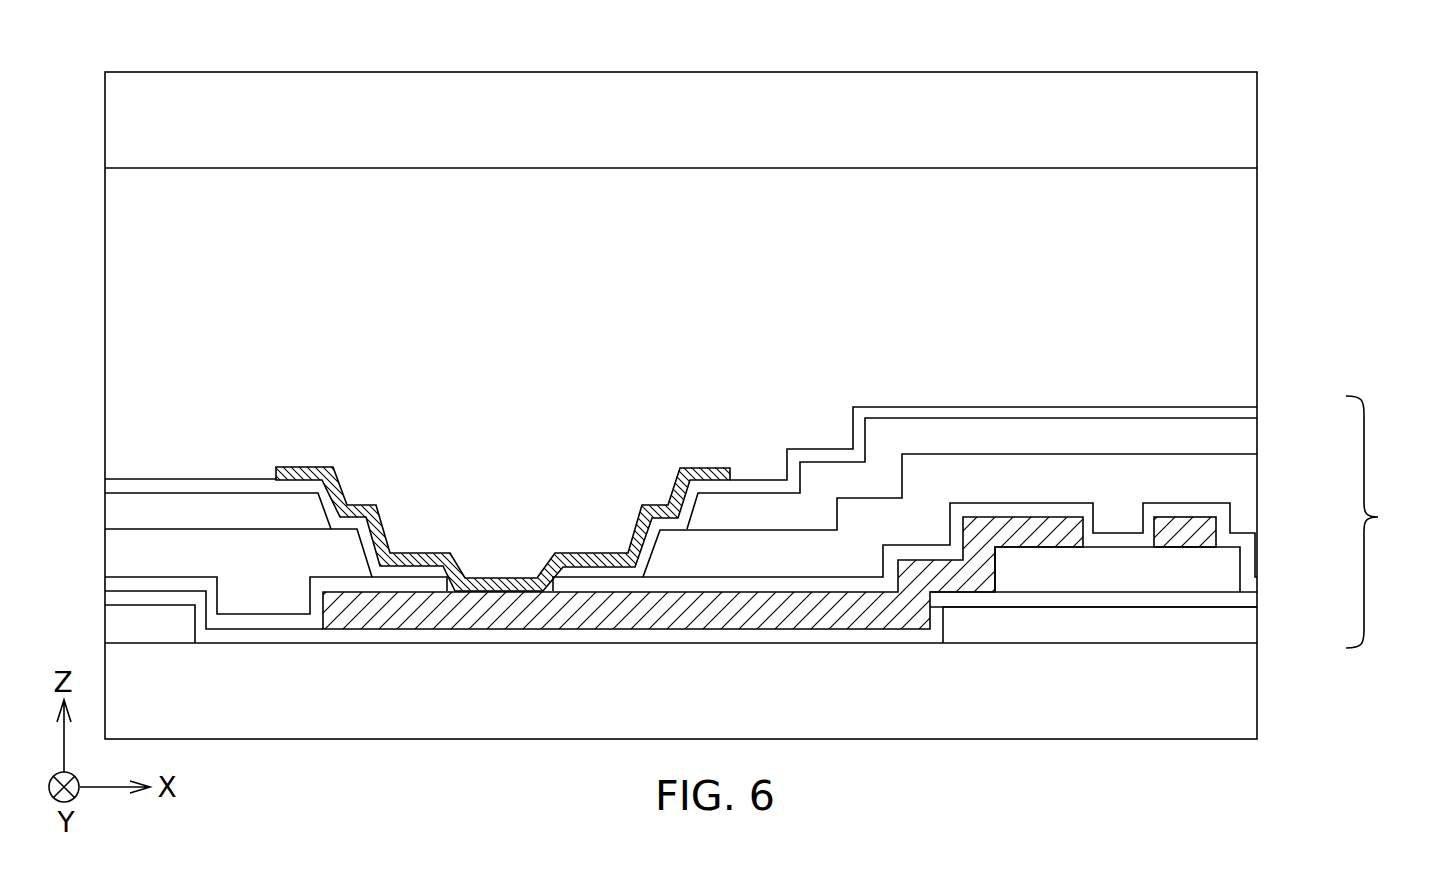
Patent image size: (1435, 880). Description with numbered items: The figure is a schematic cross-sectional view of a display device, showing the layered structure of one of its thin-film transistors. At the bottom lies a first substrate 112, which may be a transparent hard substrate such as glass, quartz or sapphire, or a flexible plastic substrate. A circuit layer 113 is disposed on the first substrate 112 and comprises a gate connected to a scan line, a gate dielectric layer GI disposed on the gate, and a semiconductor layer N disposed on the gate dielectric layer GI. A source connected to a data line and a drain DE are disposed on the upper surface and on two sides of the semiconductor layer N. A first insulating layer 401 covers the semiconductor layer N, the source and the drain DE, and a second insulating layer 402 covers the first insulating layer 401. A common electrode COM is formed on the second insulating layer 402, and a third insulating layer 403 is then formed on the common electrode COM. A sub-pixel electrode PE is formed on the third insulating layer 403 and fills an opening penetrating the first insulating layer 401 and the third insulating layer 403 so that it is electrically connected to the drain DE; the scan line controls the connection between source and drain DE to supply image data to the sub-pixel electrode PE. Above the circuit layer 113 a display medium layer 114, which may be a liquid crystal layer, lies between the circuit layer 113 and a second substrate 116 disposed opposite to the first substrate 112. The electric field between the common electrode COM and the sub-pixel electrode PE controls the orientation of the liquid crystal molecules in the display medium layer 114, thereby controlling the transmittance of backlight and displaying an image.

The second substrate 116 is at (1250, 113).
The display medium layer 114 is at (1250, 290).
The circuit layer 113 is at (1378, 517).
The first substrate 112 is at (1250, 686).
The third insulating layer 403 is at (1252, 412).
The common electrode COM is at (1250, 443).
The second insulating layer 402 is at (1250, 477).
The first insulating layer 401 is at (1220, 504).
The semiconductor layer N is at (1222, 583).
The gate dielectric layer GI is at (1245, 600).
The sub-pixel electrode PE is at (706, 467).
The drain DE is at (1043, 530).